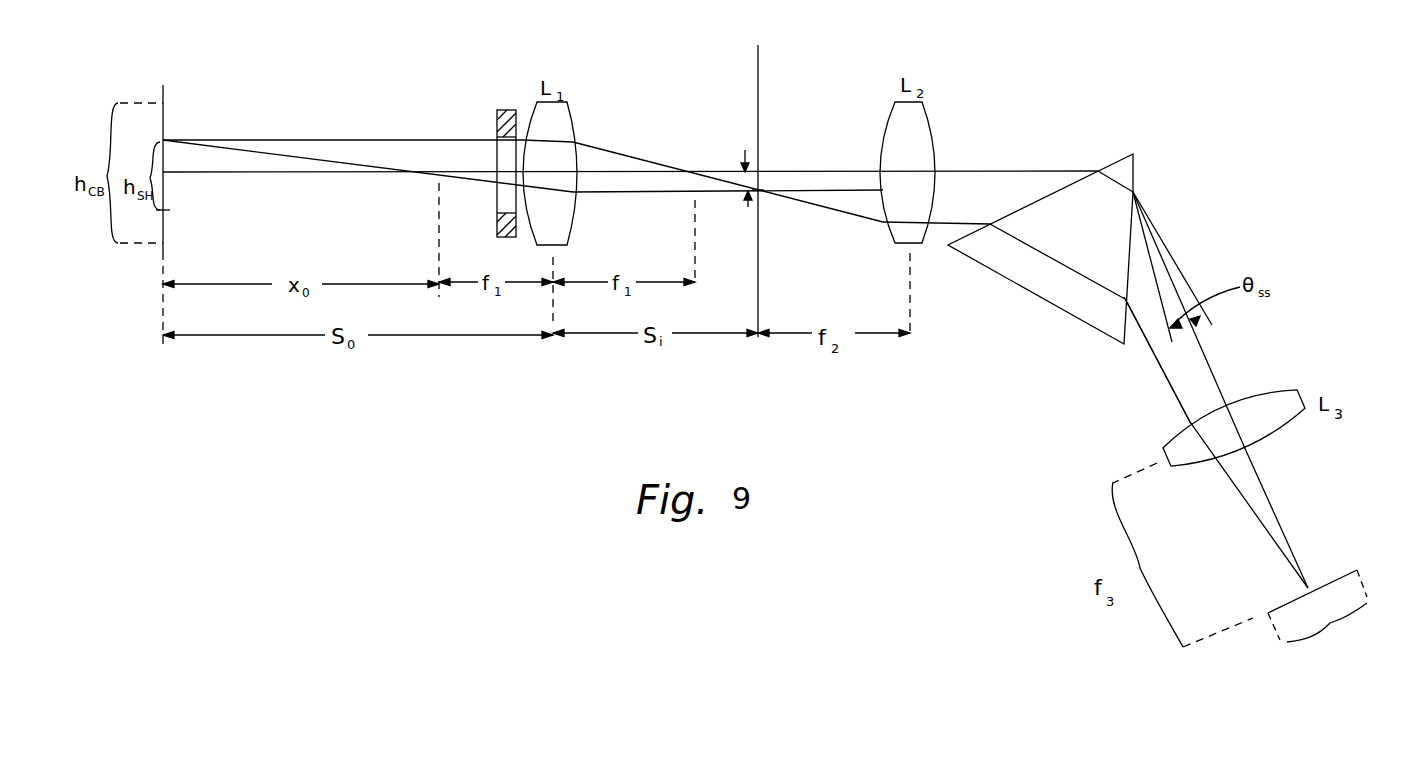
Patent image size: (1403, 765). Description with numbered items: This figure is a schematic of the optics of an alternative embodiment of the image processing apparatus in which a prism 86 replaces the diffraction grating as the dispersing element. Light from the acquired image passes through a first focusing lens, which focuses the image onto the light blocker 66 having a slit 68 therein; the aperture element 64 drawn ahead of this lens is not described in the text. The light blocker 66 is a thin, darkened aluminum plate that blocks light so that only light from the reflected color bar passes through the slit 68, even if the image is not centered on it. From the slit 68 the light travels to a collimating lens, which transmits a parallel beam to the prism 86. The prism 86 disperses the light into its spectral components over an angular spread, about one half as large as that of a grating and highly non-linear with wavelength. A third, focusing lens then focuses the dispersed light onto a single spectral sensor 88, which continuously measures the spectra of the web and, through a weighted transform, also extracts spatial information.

The slit 64 is at (497, 137).
The light blocker 66 is at (758, 74).
The slit 68 is at (758, 158).
The prism 86 is at (1103, 162).
The spectral sensor 88 is at (1352, 567).